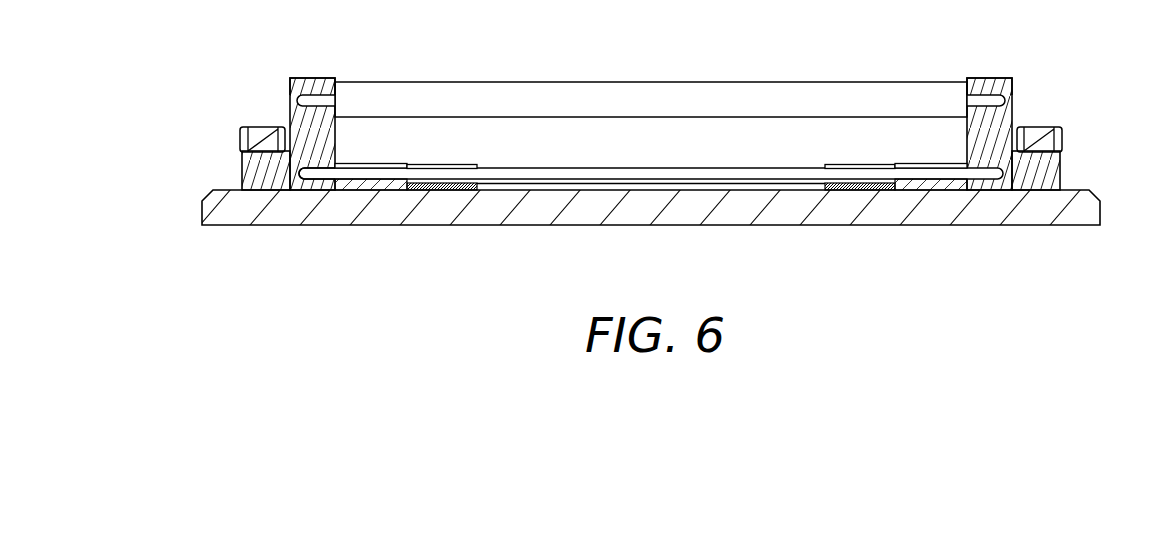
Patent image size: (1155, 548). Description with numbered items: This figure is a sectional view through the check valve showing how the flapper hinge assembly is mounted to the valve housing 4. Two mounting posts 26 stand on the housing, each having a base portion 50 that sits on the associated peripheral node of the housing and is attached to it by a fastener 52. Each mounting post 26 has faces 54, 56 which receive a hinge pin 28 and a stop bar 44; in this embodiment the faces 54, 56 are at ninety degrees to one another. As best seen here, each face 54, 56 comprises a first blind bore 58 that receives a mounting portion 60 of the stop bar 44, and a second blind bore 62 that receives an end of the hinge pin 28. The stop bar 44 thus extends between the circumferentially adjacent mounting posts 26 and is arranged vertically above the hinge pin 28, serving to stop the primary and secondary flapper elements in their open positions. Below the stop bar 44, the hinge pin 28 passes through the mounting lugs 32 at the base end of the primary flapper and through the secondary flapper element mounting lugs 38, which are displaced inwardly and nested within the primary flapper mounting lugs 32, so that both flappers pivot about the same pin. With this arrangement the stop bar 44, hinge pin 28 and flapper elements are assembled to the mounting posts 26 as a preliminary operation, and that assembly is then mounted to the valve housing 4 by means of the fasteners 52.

The valve housing 4 is at (1030, 213).
The mounting post 26 is at (327, 154).
The hinge pin 28 is at (651, 175).
The mounting lug 32 is at (373, 185).
The secondary flapper element mounting lug 38 is at (450, 185).
The stop bar 44 is at (651, 95).
The base portion 50 is at (250, 173).
The fastener 52 is at (262, 130).
The face 54 is at (684, 111).
The face 56 is at (1013, 110).
The first blind bore 58 is at (313, 93).
The mounting portion 60 is at (332, 100).
The second blind bore 62 is at (308, 185).